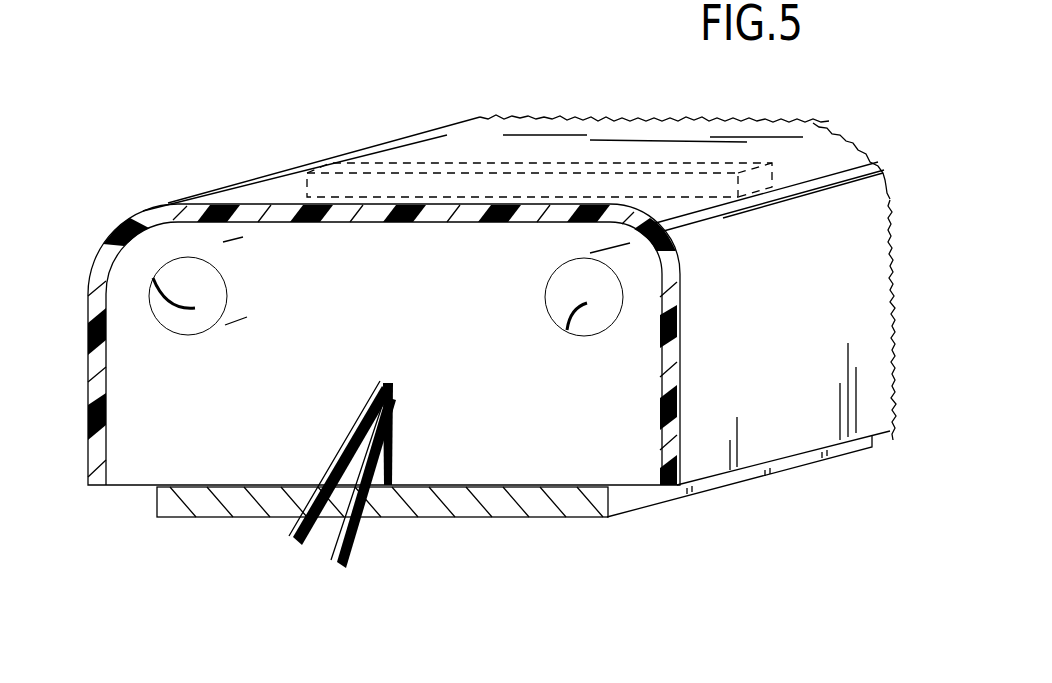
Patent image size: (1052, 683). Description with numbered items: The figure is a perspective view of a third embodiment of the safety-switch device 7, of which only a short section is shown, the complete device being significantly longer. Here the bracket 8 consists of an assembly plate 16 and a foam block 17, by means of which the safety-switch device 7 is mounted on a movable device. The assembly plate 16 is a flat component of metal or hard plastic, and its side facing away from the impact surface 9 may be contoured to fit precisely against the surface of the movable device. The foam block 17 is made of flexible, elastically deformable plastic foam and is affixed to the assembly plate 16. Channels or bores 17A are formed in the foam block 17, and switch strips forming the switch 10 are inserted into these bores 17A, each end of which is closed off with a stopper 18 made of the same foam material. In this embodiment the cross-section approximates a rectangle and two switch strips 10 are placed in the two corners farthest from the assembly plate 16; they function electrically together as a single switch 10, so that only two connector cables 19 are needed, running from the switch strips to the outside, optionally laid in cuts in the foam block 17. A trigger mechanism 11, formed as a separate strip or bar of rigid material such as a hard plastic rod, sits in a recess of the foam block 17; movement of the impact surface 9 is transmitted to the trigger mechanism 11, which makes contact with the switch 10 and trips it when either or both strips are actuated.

The safety-switch device 7 is at (638, 106).
The bracket 8 is at (114, 506).
The impact surface 9 is at (549, 142).
The switch 10 is at (201, 252).
The trigger mechanism 11 is at (376, 178).
The assembly plate 16 is at (415, 497).
The foam block 17 is at (467, 430).
The bores 17A is at (141, 289).
The stopper 18 is at (146, 283).
The connector cables 19 is at (343, 562).